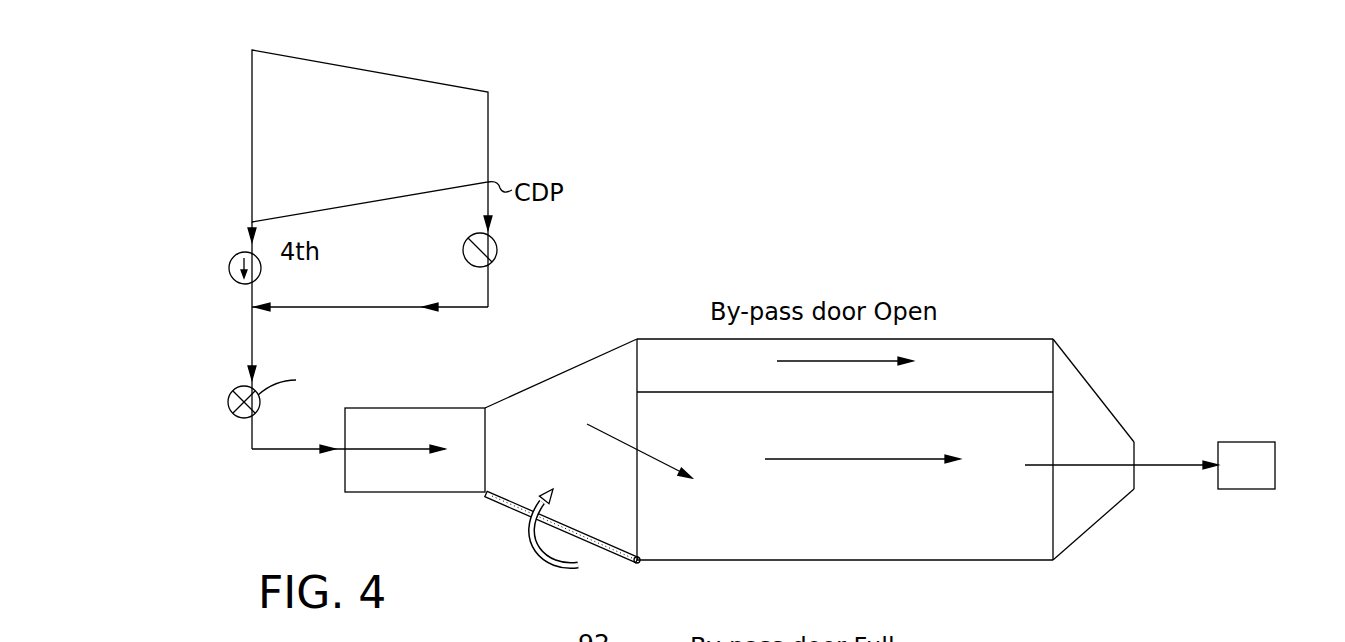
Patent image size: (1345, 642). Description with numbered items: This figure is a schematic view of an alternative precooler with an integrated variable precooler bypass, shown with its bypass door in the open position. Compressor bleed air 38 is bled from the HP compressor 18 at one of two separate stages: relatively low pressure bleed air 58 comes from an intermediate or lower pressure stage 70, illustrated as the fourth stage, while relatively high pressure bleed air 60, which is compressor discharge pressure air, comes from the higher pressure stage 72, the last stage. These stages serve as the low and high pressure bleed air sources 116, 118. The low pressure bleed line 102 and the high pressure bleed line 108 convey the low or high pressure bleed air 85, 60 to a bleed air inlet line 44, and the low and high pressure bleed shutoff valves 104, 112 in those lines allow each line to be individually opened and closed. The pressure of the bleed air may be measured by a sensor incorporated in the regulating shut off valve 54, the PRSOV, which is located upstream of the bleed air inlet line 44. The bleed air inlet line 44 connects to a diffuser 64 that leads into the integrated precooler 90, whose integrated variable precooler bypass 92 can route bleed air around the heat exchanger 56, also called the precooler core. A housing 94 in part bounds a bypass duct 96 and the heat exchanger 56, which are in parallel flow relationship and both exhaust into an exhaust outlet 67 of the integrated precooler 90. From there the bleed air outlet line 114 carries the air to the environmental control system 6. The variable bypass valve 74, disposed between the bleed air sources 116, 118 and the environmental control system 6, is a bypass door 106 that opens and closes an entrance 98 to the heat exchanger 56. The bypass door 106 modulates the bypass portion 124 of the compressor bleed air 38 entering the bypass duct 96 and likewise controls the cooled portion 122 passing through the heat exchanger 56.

The HP compressor 18 is at (372, 71).
The intermediate or lower pressure stage 70 is at (252, 222).
The higher pressure stage 72 is at (488, 182).
The high pressure bleed air source 118 is at (488, 182).
The low pressure bleed air source 116 is at (252, 222).
The relatively low pressure bleed air 58 is at (246, 239).
The high pressure bleed shutoff valve 112 is at (465, 242).
The low pressure bleed shutoff valve 104 is at (230, 280).
The low pressure bleed line 102 is at (250, 305).
The high pressure bleed line 108 is at (310, 307).
The relatively high pressure bleed air 60 is at (442, 307).
The low pressure bleed air 85 is at (255, 352).
The regulating shut off valve (PRSOV) 54 is at (228, 404).
The compressor bleed air 38 is at (312, 449).
The bleed air inlet line 44 is at (268, 450).
The diffuser 64 is at (590, 360).
The integrated variable precooler bypass 92 is at (660, 339).
The bypass duct 96 is at (684, 380).
The bypass portion 124 is at (836, 362).
The housing 94 is at (1025, 339).
The bleed air outlet line 114 is at (1170, 465).
The environmental control system 6 is at (1255, 442).
The entrance 98 is at (640, 485).
The bypass door 106 is at (560, 525).
The variable bypass valve 74 is at (640, 563).
The cooled portion 122 is at (922, 458).
The heat exchanger 56 is at (868, 520).
The exhaust outlet 67 is at (1095, 523).
The integrated precooler 90 is at (1050, 575).